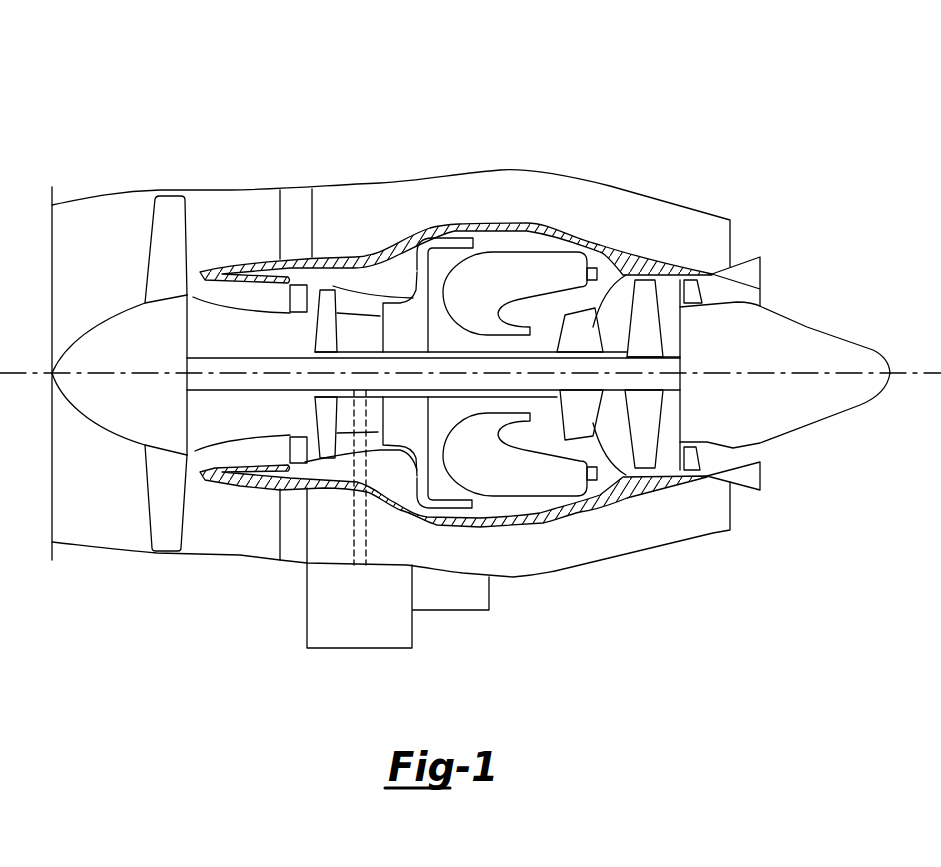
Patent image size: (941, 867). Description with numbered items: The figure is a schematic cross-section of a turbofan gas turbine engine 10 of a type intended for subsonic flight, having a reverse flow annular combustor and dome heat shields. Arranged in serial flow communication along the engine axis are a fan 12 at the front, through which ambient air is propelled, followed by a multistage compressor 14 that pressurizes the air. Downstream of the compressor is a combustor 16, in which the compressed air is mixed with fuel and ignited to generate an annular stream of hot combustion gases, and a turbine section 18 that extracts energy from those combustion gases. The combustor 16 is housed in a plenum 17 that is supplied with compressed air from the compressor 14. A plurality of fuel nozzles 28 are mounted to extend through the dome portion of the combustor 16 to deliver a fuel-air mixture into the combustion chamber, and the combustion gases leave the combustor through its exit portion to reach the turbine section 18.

The gas turbine engine 10 is at (627, 124).
The fan 12 is at (163, 488).
The multistage compressor 14 is at (353, 298).
The combustor 16 is at (520, 283).
The plenum 17 is at (543, 245).
The turbine section 18 is at (613, 422).
The fuel nozzles 28 is at (592, 268).